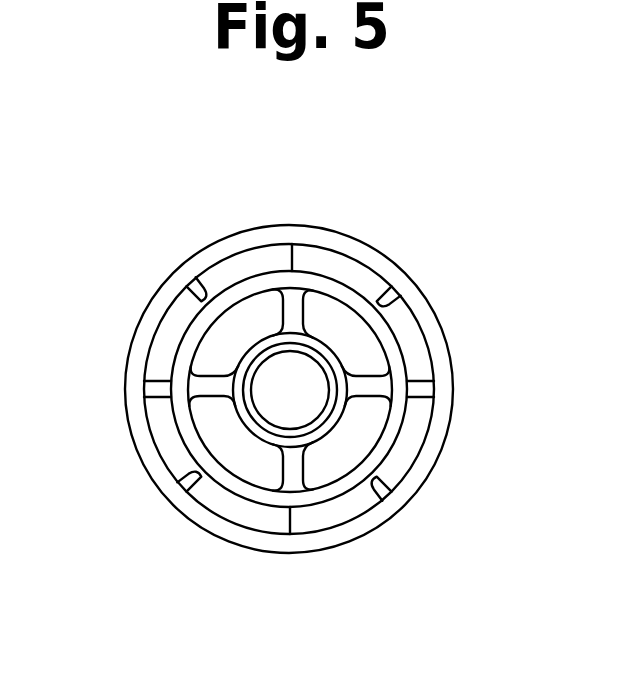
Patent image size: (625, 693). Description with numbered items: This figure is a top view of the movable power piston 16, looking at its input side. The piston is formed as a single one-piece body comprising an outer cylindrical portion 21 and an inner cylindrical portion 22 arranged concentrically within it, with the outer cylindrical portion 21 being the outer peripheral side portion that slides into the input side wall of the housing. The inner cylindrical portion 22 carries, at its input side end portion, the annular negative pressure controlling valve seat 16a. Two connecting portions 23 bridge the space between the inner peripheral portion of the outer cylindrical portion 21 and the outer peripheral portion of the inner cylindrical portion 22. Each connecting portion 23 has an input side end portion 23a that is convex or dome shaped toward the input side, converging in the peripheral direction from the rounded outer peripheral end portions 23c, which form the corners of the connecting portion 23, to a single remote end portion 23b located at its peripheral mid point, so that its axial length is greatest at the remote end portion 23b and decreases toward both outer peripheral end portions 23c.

The movable power piston 16 is at (377, 225).
The negative pressure controlling valve seat 16a is at (325, 270).
The outer cylindrical portion 21 is at (440, 352).
The inner cylindrical portion 22 is at (177, 343).
The connecting portion 23 is at (235, 245).
The input side end portion 23a is at (357, 272).
The remote end portion 23b is at (283, 248).
The outer peripheral end portion 23c is at (192, 294).